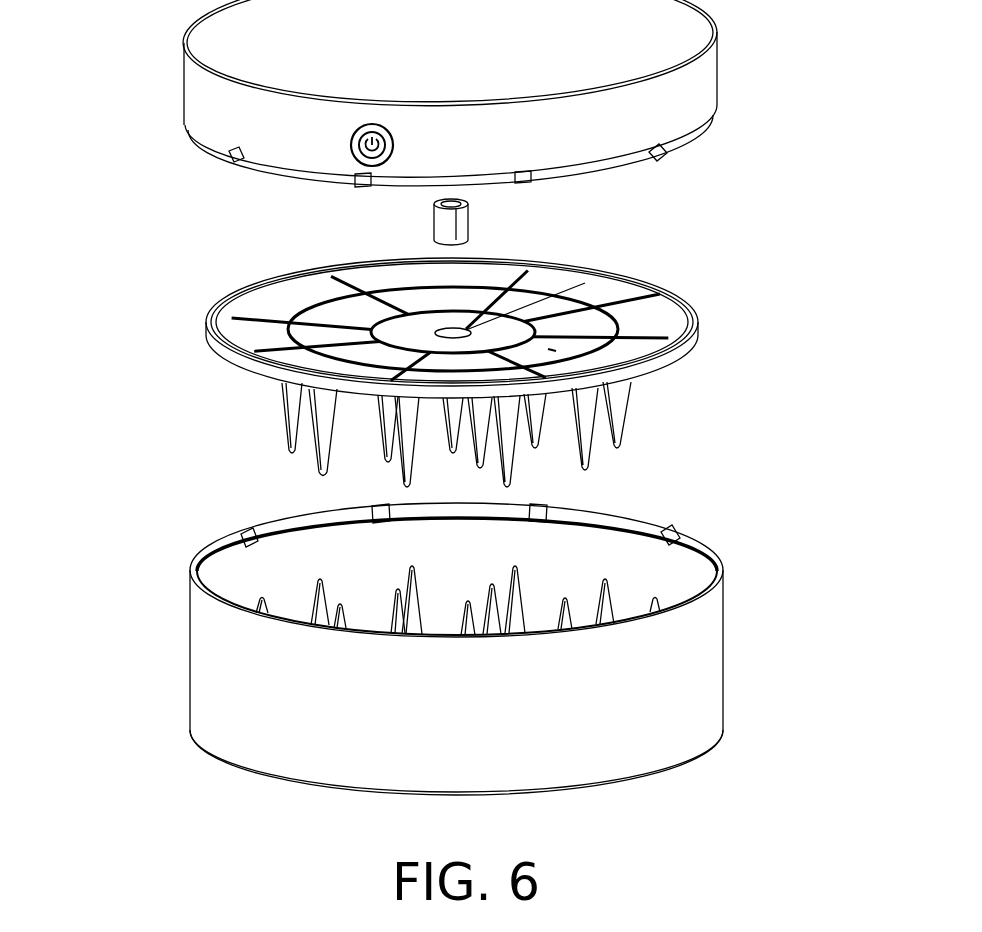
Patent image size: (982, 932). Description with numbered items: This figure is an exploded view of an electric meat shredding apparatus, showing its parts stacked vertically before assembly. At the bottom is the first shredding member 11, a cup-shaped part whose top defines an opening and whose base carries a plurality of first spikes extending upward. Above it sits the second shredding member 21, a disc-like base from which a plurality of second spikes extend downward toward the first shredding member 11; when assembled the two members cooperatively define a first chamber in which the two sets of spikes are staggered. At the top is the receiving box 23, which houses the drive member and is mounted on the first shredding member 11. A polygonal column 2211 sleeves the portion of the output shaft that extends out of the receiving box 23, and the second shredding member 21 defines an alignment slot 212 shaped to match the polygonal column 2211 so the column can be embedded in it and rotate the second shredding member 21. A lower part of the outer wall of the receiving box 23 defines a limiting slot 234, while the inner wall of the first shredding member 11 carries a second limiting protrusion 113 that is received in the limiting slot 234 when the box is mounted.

The first shredding member 11 is at (693, 657).
The second limiting protrusion 113 is at (667, 530).
The second shredding member 21 is at (660, 334).
The alignment slot 212 is at (585, 283).
The polygonal column 2211 is at (433, 217).
The receiving box 23 is at (687, 98).
The limiting slot 234 is at (661, 154).